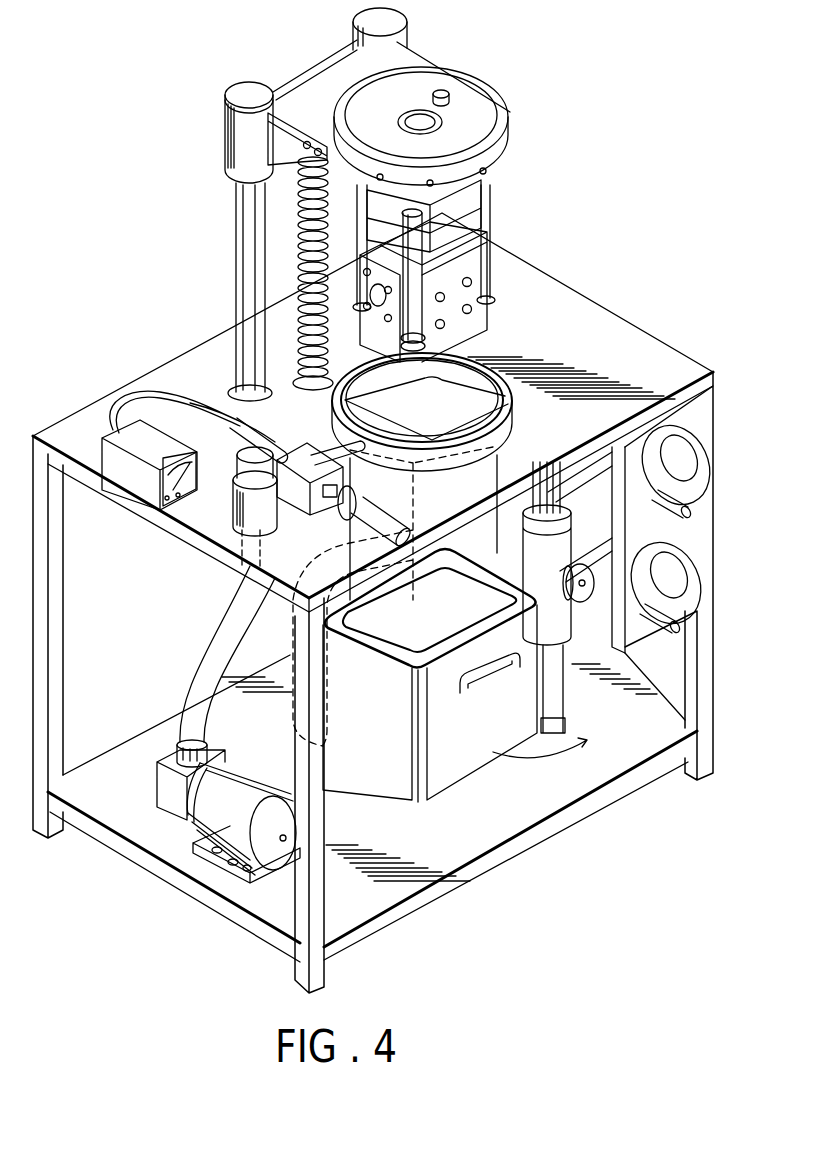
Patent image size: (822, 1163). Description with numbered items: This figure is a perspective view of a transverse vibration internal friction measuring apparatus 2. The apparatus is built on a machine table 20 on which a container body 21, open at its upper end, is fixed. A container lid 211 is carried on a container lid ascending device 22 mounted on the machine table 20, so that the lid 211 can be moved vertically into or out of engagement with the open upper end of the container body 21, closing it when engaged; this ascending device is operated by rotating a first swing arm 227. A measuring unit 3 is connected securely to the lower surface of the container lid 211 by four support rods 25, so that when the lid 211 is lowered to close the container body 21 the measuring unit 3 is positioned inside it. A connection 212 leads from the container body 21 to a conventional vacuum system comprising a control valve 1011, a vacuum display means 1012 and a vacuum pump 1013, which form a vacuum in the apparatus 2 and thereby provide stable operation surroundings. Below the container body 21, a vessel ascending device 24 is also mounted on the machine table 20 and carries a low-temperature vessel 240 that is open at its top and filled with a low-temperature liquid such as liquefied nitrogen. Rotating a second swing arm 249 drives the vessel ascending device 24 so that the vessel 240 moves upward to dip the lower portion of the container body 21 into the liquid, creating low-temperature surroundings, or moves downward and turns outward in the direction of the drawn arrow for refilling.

The transverse vibration internal friction measuring apparatus 2 is at (614, 287).
The machine table 20 is at (565, 300).
The container lid ascending device 22 is at (327, 93).
The container lid 211 is at (497, 160).
The support rods 25 is at (413, 243).
The measuring unit 3 is at (477, 317).
The container body 21 is at (512, 422).
The feed nozzle 212 is at (343, 453).
The control valve 1011 is at (300, 503).
The vacuum display means 1012 is at (130, 440).
The vacuum pump 1013 is at (227, 820).
The first swing arm 227 is at (684, 500).
The second swing arm 249 is at (680, 617).
The vessel ascending device 24 is at (567, 640).
The low-temperature vessel 240 is at (385, 767).